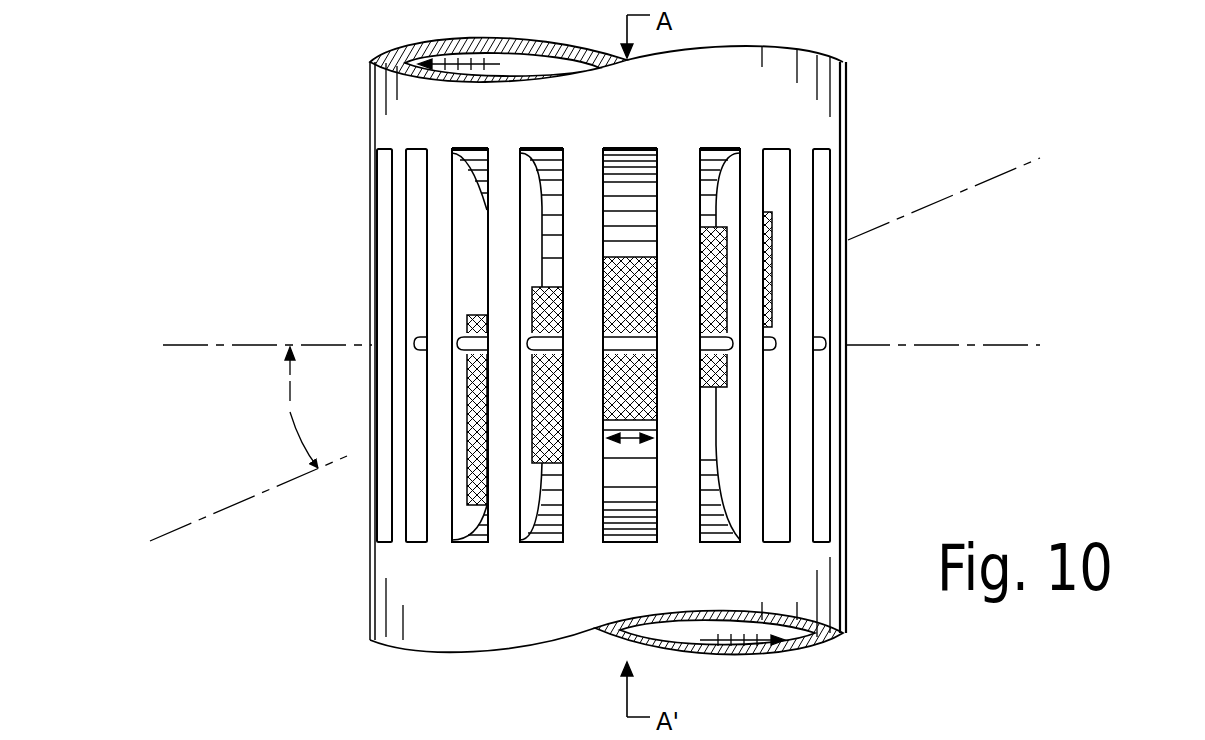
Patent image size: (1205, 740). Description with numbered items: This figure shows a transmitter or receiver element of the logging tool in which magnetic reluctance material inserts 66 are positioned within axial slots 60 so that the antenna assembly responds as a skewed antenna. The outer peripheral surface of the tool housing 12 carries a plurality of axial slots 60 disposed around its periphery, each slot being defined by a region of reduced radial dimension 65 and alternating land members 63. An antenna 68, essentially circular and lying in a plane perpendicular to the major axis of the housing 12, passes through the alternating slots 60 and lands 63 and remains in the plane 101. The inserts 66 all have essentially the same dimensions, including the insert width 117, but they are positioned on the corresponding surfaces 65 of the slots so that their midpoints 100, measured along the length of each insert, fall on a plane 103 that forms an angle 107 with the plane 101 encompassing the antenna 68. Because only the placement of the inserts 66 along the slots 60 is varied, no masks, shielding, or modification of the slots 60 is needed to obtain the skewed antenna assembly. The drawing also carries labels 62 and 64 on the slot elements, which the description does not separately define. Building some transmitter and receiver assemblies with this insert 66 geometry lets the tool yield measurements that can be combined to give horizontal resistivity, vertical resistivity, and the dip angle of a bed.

The tool housing 12 is at (845, 85).
The axial slots 60 is at (709, 138).
The outer blade 62 is at (530, 503).
The land members 63 is at (507, 155).
The inner blade 64 is at (538, 548).
The regions of reduced radial dimensions 65 is at (627, 222).
The magnetic reluctance material insert 66 is at (703, 240).
The antenna 68 is at (700, 345).
The midpoint of the insert 100 is at (467, 397).
The plane encompassing the antenna 101 is at (250, 347).
The plane of insert midpoints 103 is at (283, 492).
The tilt angle 107 is at (290, 407).
The width of the insert 117 is at (630, 440).